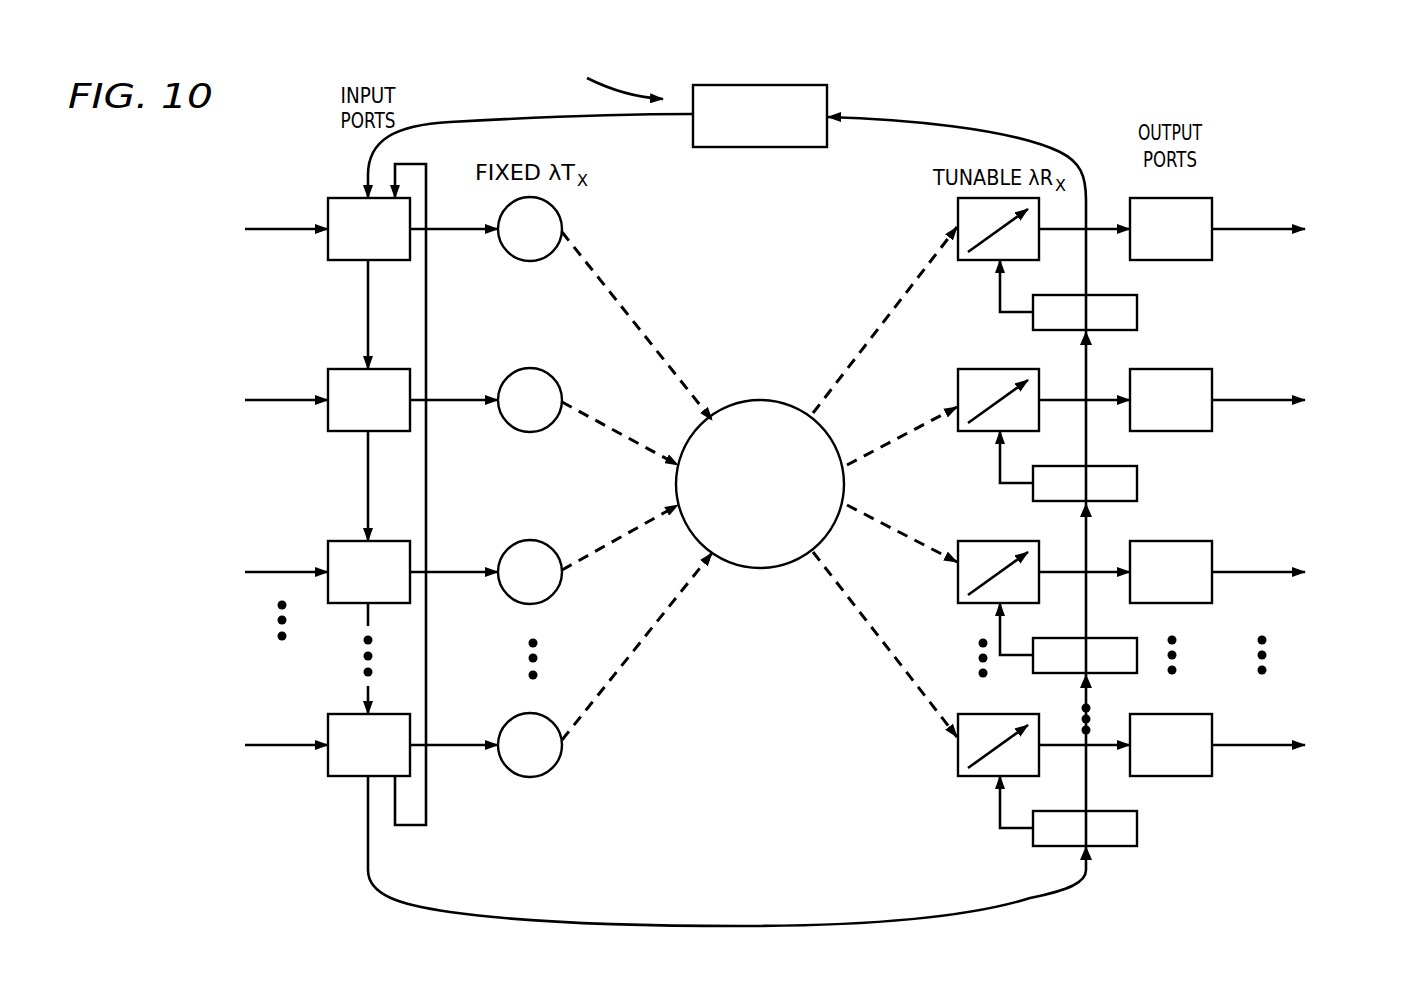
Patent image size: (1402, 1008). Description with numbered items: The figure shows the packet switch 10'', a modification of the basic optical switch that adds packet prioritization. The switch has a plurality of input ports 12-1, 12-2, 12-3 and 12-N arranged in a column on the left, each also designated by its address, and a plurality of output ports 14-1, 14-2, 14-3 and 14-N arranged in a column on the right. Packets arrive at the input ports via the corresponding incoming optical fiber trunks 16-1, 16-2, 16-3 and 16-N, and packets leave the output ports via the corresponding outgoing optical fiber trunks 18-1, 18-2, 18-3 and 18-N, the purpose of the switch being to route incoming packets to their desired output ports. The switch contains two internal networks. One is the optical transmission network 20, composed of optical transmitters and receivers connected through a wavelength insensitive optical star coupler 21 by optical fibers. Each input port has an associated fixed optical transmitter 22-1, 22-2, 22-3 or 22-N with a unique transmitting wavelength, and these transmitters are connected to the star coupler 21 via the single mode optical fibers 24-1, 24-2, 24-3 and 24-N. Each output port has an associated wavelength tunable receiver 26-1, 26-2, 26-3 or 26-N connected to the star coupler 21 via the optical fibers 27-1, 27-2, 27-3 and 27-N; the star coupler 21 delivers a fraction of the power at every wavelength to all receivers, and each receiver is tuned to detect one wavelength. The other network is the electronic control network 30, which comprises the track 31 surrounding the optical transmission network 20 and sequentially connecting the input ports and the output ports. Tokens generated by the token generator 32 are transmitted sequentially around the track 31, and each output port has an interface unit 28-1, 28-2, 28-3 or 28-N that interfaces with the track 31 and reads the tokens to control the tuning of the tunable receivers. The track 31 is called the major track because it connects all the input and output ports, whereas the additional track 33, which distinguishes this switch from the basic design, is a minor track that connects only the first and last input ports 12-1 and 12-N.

The packet switch 10'' is at (886, 77).
The input port 12-1 is at (348, 198).
The input port 12-2 is at (348, 369).
The input port 12-3 is at (348, 541).
The input port 12-N is at (348, 714).
The output port 14-1 is at (1187, 198).
The output port 14-2 is at (1187, 369).
The output port 14-3 is at (1187, 541).
The output port 14-N is at (1187, 714).
The incoming optical fiber trunk 16-1 is at (272, 229).
The incoming optical fiber trunk 16-2 is at (272, 400).
The incoming optical fiber trunk 16-3 is at (272, 572).
The incoming optical fiber trunk 16-N is at (272, 745).
The outgoing optical fiber trunk 18-1 is at (1243, 229).
The outgoing optical fiber trunk 18-2 is at (1243, 400).
The outgoing optical fiber trunk 18-3 is at (1243, 572).
The outgoing optical fiber trunk 18-N is at (1243, 745).
The optical transmission network 20 is at (746, 393).
The optical star coupler 21 is at (757, 567).
The optical transmitter 22-1 is at (522, 259).
The optical transmitter 22-2 is at (522, 430).
The optical transmitter 22-3 is at (522, 602).
The optical transmitter 22-N is at (522, 775).
The single mode optical fiber 24-1 is at (657, 345).
The single mode optical fiber 24-2 is at (583, 408).
The single mode optical fiber 24-3 is at (640, 527).
The single mode optical fiber 24-N is at (633, 650).
The wavelength tunable receiver 26-1 is at (982, 261).
The wavelength tunable receiver 26-2 is at (980, 432).
The wavelength tunable receiver 26-3 is at (982, 604).
The wavelength tunable receiver 26-N is at (983, 777).
The optical fiber 27-1 is at (910, 290).
The optical fiber 27-2 is at (927, 422).
The optical fiber 27-3 is at (932, 550).
The optical fiber 27-N is at (884, 642).
The interface unit 28-1 is at (1138, 314).
The interface unit 28-2 is at (1138, 485).
The interface unit 28-3 is at (1135, 637).
The interface unit 28-N is at (1138, 829).
The electronic control network 30 is at (614, 78).
The track 31 is at (368, 826).
The token generator 32 is at (719, 84).
The track 33 is at (427, 331).